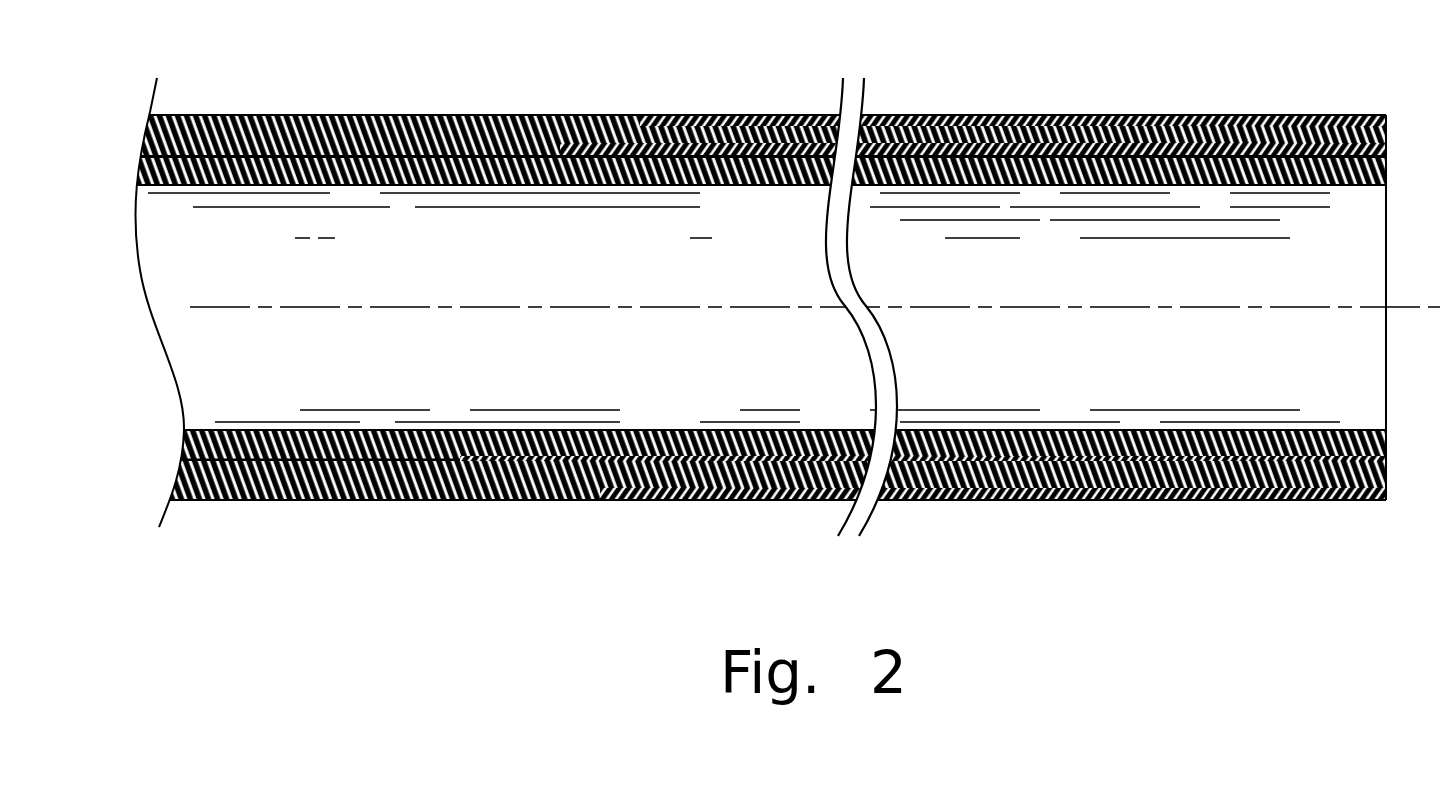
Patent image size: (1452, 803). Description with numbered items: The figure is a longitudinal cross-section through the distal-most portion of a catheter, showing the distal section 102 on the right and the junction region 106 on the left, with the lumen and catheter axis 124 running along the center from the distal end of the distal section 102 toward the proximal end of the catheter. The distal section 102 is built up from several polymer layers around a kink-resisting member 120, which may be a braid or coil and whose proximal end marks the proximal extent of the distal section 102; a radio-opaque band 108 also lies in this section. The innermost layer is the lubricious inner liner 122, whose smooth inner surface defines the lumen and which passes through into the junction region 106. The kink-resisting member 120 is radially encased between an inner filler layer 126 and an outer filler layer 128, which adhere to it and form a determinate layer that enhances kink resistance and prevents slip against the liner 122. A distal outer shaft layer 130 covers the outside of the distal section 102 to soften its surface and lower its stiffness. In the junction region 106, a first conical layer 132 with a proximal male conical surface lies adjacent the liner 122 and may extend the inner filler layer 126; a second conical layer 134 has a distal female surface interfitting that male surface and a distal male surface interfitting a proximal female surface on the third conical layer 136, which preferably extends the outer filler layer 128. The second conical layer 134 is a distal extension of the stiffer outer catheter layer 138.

The distal section 102 is at (1383, 105).
The junction region 106 is at (717, 105).
The radio-opaque band 108 is at (1335, 168).
The kink-resisting member 120 is at (942, 157).
The inner liner 122 is at (1053, 160).
The catheter axis 124 is at (1182, 307).
The inner filler layer 126 is at (1105, 498).
The outer filler layer 128 is at (1185, 477).
The distal outer shaft layer 130 is at (970, 498).
The first conical layer 132 is at (670, 432).
The second conical layer 134 is at (530, 502).
The third conical layer 136 is at (668, 502).
The outer catheter layer 138 is at (243, 502).